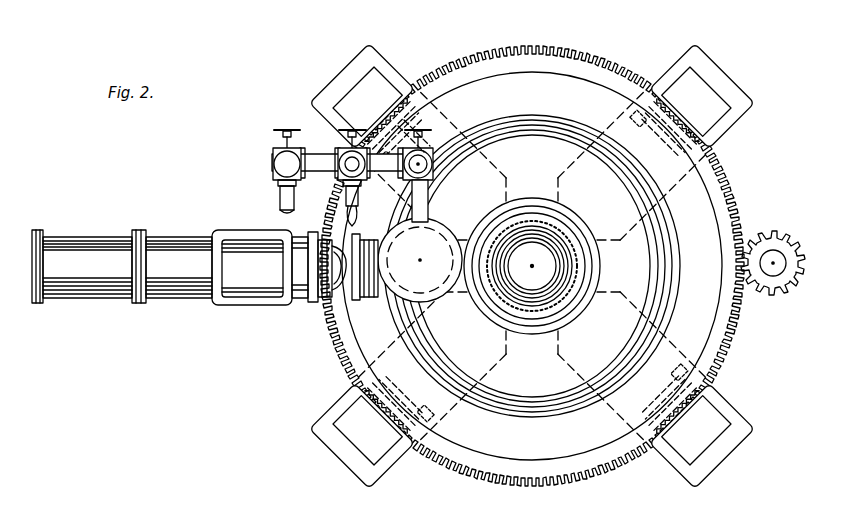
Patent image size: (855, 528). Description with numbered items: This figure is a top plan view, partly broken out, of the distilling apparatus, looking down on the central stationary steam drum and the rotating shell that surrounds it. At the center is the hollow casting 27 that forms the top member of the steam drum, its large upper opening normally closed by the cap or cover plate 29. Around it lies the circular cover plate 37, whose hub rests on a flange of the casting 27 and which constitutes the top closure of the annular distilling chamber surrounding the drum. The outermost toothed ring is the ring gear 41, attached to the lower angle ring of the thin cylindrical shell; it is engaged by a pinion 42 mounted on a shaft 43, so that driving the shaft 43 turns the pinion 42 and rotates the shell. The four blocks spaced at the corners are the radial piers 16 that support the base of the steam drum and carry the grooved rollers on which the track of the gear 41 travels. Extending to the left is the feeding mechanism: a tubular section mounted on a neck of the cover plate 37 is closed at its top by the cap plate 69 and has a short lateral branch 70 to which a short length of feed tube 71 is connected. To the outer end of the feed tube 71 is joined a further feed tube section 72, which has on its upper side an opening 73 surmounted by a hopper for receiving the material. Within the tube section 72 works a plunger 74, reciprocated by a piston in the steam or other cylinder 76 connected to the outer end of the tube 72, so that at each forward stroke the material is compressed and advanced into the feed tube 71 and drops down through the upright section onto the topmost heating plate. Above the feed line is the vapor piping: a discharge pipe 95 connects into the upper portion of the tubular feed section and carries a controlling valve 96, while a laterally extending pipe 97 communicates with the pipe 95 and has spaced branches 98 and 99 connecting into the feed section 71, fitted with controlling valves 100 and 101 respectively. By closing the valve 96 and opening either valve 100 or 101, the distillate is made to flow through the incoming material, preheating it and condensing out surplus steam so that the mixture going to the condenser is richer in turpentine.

The radial piers 16 is at (395, 78).
The hollow casting 27 is at (540, 206).
The cap or cover plate 29 is at (532, 266).
The circular cover plate 37 is at (531, 134).
The ring gear 41 is at (543, 488).
The pinion 42 is at (776, 236).
The shaft 43 is at (773, 278).
The cap plate 69 is at (420, 260).
The lateral branch 70 is at (372, 240).
The feed tube 71 is at (360, 276).
The feed tube section 72 is at (181, 237).
The opening 73 is at (247, 240).
The plunger 74 is at (252, 268).
The cylinder 76 is at (92, 237).
The discharge pipe 95 is at (432, 176).
The controlling valve 96 is at (432, 128).
The laterally extending pipe 97 is at (340, 160).
The branch 98 is at (360, 196).
The branch 99 is at (293, 204).
The controlling valve 100 is at (340, 126).
The controlling valve 101 is at (276, 131).